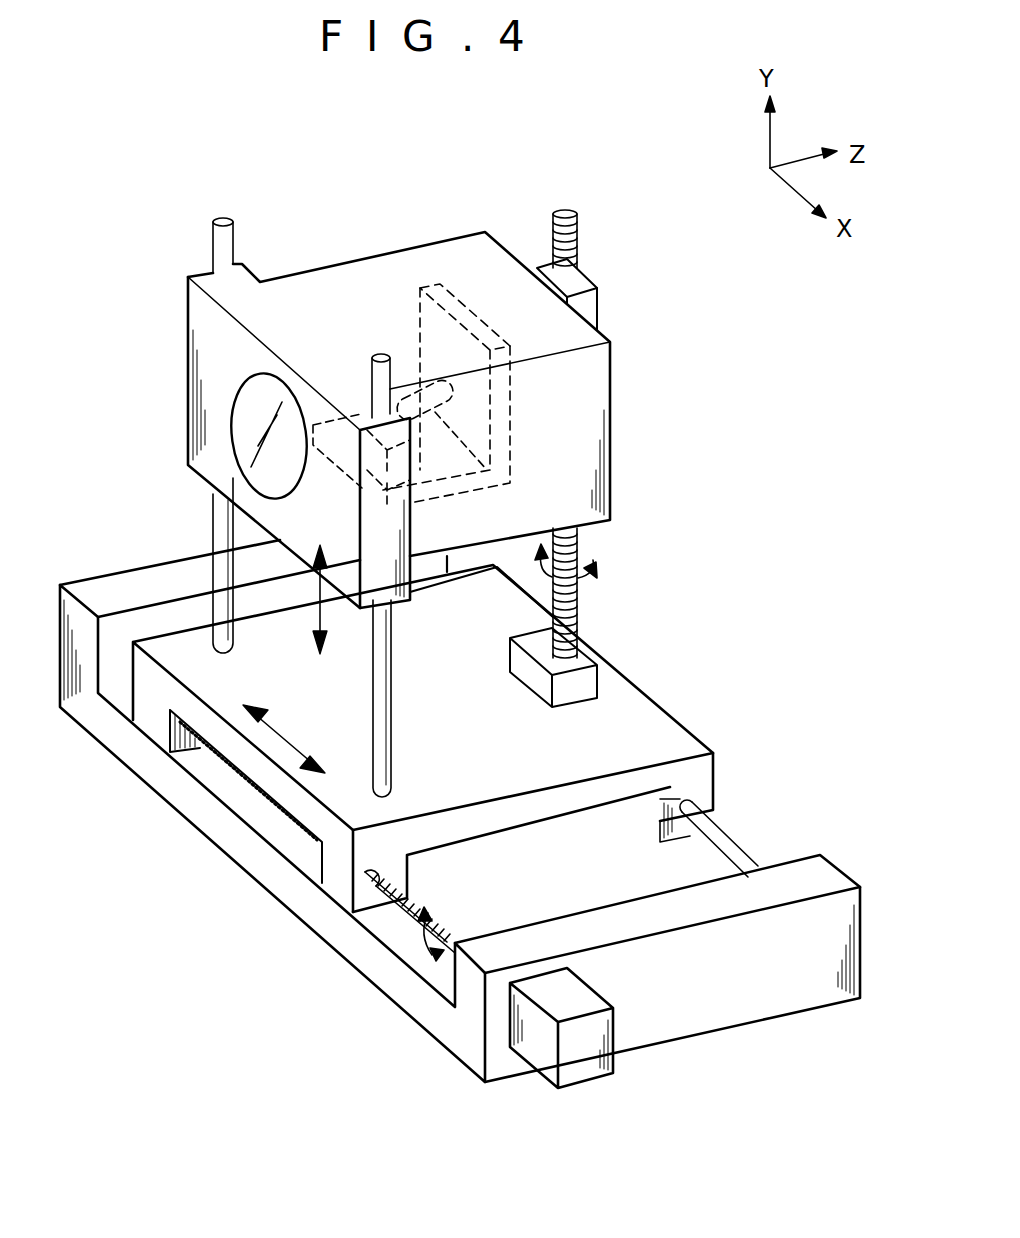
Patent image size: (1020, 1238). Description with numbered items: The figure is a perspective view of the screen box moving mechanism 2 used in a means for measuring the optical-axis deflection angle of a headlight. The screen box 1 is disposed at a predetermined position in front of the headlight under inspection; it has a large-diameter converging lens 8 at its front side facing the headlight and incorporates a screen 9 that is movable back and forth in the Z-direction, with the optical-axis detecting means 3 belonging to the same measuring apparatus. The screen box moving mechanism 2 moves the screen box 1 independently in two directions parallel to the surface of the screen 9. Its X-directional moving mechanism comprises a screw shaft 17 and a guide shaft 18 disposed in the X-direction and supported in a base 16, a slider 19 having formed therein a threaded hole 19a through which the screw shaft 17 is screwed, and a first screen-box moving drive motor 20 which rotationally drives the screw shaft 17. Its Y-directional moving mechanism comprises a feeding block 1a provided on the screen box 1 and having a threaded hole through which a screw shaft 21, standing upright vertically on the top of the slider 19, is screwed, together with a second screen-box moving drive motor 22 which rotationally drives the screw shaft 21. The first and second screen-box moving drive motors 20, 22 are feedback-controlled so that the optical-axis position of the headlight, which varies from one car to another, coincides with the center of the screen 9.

The screen box 1 is at (385, 254).
The feeding block 1a is at (598, 300).
The screen box moving mechanism 2 is at (603, 616).
The optical-axis detecting means 3 is at (473, 477).
The large-diameter converging lens 8 is at (258, 400).
The screen 9 is at (468, 320).
The base 16 is at (410, 1000).
The screw shaft 17 is at (415, 906).
The guide shaft 18 is at (730, 843).
The slider 19 is at (467, 751).
The threaded hole 19a is at (352, 868).
The first screen-box moving drive motor 20 is at (615, 1068).
The screw shaft 21 is at (557, 596).
The second screen-box moving drive motor 22 is at (573, 695).